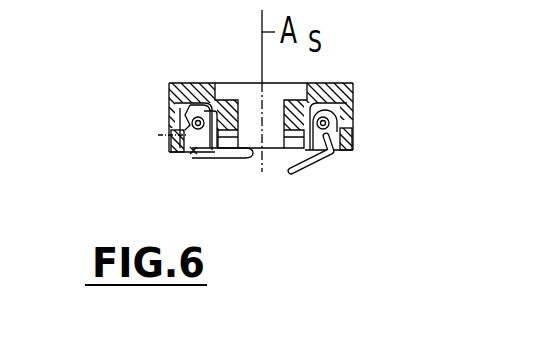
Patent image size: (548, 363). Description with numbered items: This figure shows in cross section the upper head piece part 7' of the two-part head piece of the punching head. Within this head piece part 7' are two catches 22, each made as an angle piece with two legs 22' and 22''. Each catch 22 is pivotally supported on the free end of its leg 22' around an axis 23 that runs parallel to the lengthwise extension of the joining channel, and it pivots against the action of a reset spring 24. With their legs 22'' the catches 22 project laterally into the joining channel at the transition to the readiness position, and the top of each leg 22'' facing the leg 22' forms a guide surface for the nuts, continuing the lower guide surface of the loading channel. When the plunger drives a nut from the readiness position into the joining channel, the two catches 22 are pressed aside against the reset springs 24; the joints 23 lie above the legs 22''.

The upper head piece part 7' is at (242, 114).
The axis 23 is at (196, 121).
The reset spring 24 is at (172, 135).
The leg 22' is at (165, 154).
The leg 22'' is at (221, 195).
The catch 22 is at (231, 194).